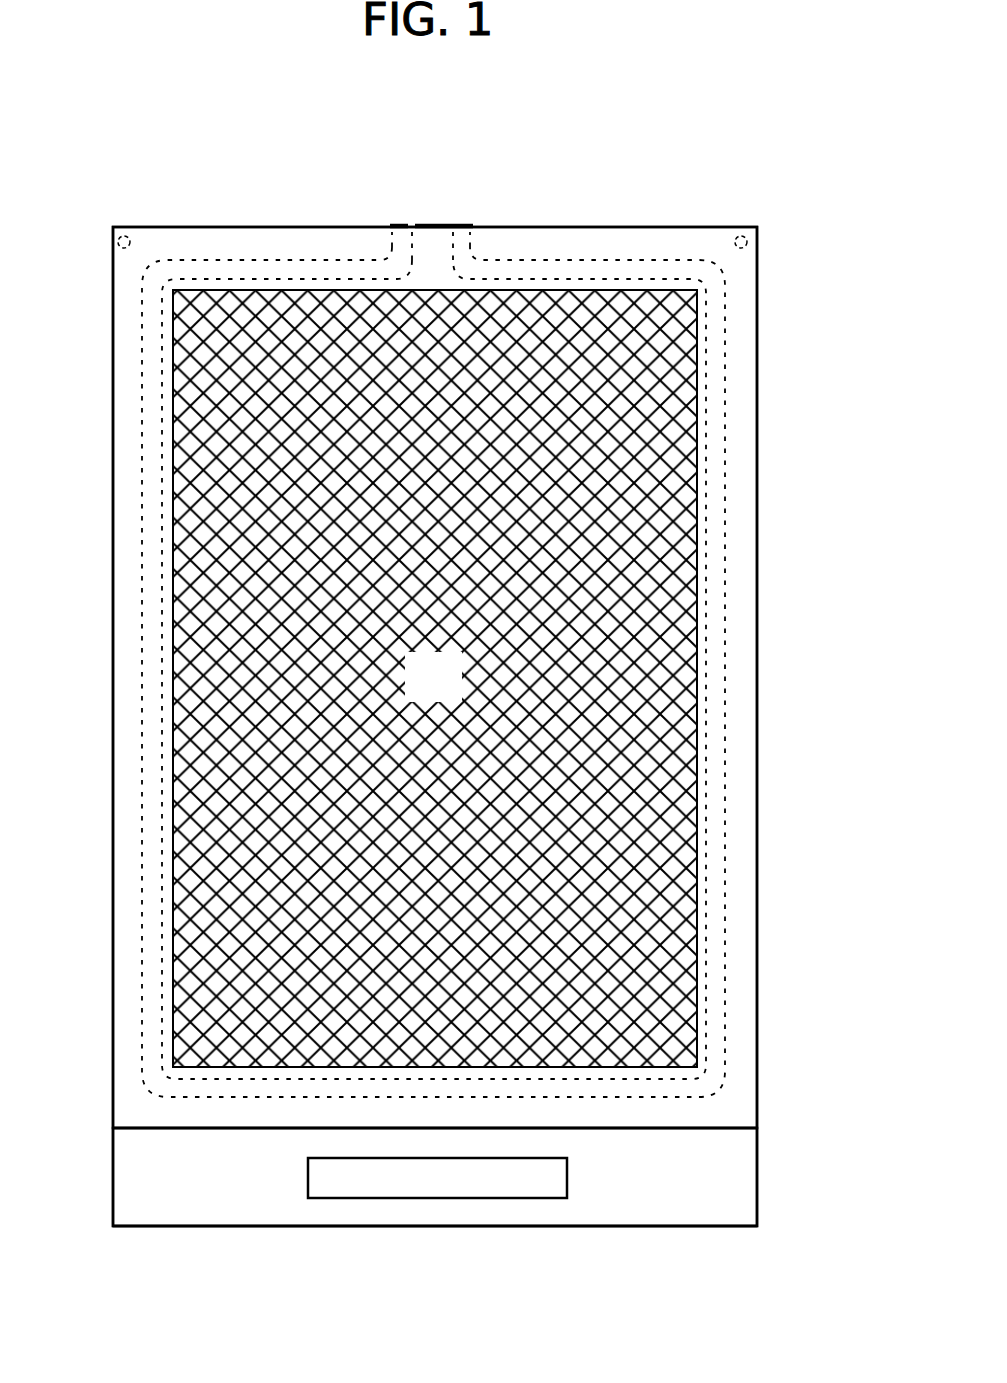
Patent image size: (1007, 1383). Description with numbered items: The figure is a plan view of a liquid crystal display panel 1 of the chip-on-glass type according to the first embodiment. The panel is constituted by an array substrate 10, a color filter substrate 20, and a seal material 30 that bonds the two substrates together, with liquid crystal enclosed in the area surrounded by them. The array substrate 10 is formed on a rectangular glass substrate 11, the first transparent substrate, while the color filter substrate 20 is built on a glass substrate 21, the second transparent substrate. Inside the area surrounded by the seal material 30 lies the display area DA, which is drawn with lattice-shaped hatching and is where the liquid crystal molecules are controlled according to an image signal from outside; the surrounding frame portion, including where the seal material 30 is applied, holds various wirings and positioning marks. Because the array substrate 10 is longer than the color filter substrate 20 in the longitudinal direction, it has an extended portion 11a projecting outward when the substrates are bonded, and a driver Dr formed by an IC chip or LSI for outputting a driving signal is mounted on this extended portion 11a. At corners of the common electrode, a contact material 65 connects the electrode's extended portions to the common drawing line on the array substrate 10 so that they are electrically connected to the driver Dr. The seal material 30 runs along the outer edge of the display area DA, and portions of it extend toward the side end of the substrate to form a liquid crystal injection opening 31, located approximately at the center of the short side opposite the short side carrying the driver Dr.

The liquid crystal display panel 1 is at (298, 114).
The array substrate 10 is at (208, 1190).
The glass substrate 11 is at (742, 1154).
The extended portion 11a is at (673, 1216).
The driver Dr is at (365, 1178).
The color filter substrate 20 is at (745, 1035).
The glass substrate 21 is at (752, 1097).
The seal material 30 is at (722, 503).
The liquid crystal injection opening 31 is at (442, 225).
The contact material 65 is at (110, 236).
The display area DA is at (454, 692).